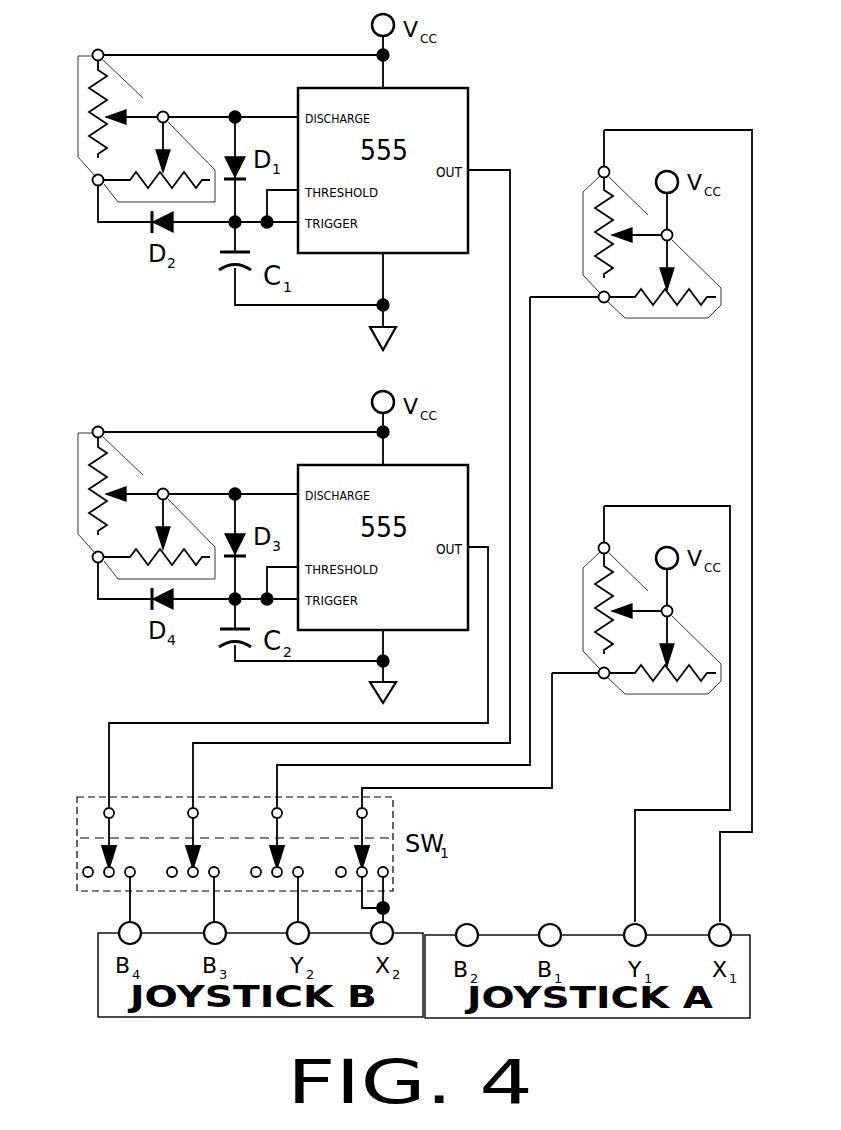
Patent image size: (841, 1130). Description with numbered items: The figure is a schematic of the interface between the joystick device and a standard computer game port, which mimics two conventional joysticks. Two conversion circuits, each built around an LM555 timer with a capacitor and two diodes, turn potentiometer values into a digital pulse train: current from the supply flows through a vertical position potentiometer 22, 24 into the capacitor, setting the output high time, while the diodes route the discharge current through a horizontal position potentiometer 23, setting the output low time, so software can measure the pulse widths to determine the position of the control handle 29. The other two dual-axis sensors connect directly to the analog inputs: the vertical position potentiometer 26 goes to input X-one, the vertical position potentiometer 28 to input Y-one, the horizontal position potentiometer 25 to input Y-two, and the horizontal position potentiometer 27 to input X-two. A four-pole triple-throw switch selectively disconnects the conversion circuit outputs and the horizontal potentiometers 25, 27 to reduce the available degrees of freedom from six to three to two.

The vertical position potentiometer 22 is at (98, 495).
The horizontal position potentiometer 23 is at (159, 534).
The vertical position potentiometer 24 is at (98, 118).
The horizontal position potentiometer 25 is at (159, 157).
The vertical position potentiometer 26 is at (605, 235).
The horizontal position potentiometer 27 is at (664, 292).
The vertical position potentiometer 28 is at (605, 611).
The control handle 29 is at (664, 670).